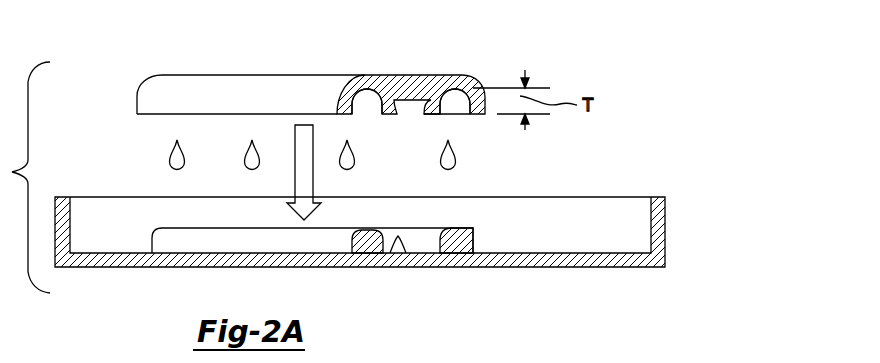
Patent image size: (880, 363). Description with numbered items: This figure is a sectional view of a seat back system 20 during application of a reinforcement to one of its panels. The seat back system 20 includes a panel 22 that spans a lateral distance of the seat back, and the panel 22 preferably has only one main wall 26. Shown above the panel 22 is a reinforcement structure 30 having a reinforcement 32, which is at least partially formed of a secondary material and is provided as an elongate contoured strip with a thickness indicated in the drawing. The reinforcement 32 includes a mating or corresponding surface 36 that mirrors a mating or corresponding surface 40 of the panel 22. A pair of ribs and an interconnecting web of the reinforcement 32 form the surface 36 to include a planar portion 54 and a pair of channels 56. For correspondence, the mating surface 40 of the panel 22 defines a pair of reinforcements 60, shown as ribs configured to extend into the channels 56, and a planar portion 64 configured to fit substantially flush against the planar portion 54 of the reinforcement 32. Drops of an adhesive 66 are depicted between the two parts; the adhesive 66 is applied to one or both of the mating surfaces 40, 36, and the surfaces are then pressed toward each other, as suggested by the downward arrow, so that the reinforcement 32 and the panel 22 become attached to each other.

The seat back system 20 is at (643, 104).
The panel 22 is at (360, 266).
The main wall 26 is at (562, 268).
The reinforcement structure 30 is at (341, 100).
The reinforcement 32 is at (408, 75).
The mating surface 36 is at (455, 122).
The mating surface 40 is at (422, 240).
The planar portion 54 is at (413, 122).
The channels 56 is at (461, 104).
The reinforcements 60 is at (366, 245).
The planar portion 64 is at (398, 238).
The adhesive 66 is at (245, 166).